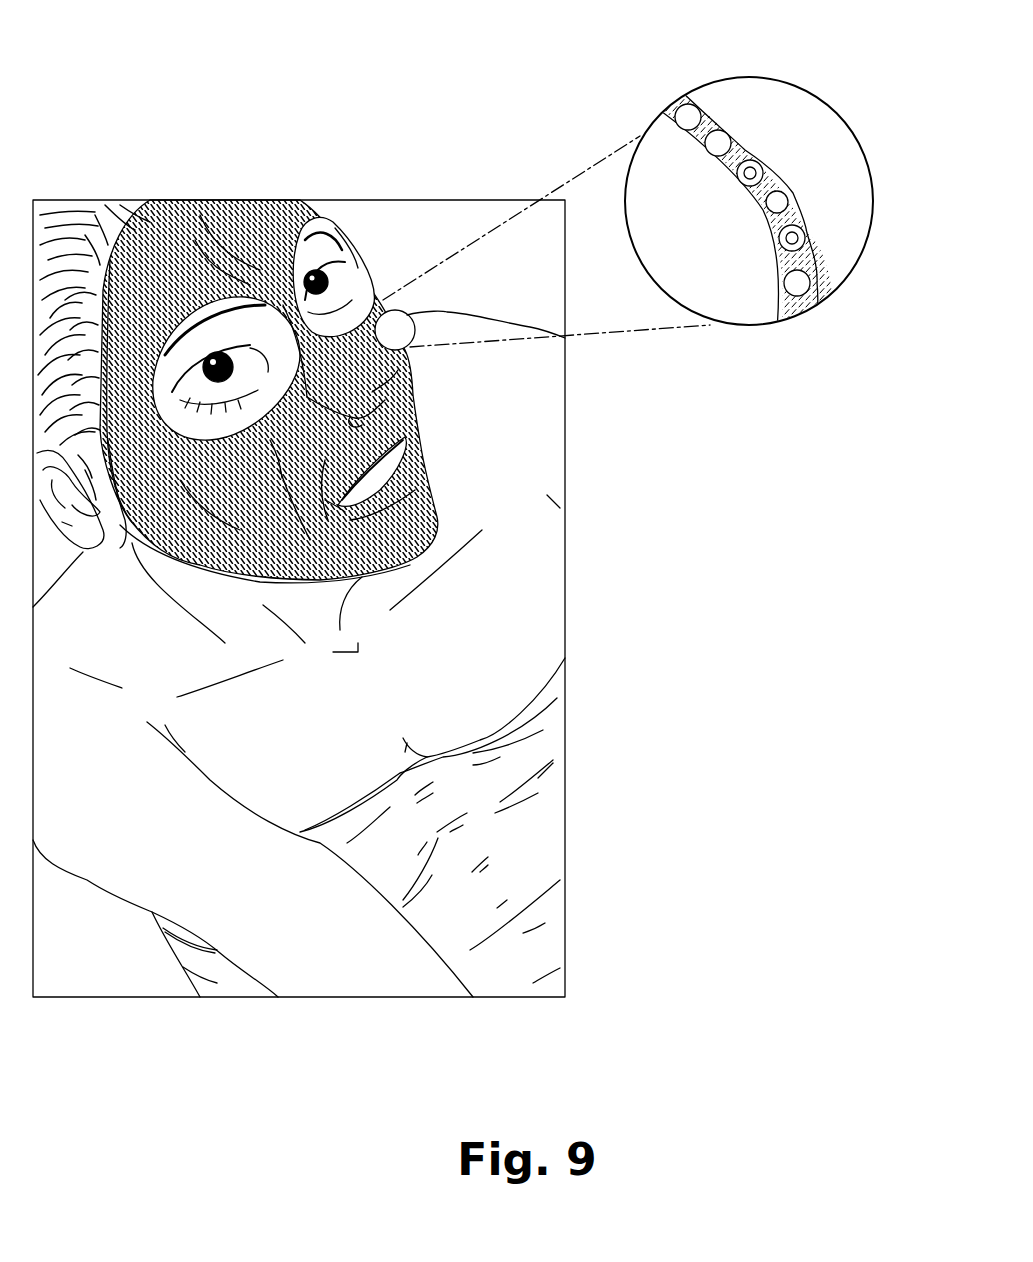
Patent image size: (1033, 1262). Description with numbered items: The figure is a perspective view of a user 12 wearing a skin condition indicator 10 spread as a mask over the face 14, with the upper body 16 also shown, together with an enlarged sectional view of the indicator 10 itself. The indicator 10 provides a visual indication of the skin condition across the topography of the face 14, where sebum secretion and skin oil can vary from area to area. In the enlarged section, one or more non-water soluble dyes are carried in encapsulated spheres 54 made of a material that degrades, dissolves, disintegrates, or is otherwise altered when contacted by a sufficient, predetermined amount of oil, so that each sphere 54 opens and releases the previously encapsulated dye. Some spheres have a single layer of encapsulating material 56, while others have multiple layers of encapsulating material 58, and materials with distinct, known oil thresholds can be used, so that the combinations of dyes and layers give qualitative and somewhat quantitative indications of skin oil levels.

The skin condition indicator 10 is at (270, 215).
The user 12 is at (747, 293).
The face 14 is at (383, 297).
The upper body 16 is at (532, 327).
The encapsulated sphere 54 is at (693, 120).
The single layer of encapsulating material 56 is at (780, 202).
The multiple layers of encapsulating material 58 is at (763, 173).